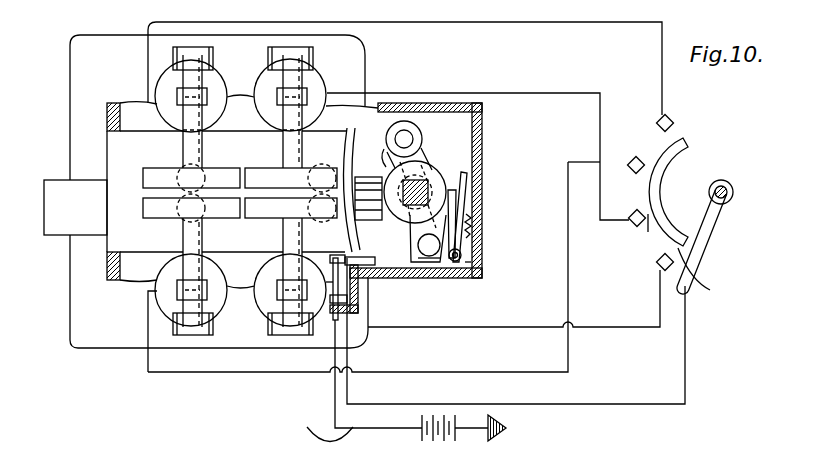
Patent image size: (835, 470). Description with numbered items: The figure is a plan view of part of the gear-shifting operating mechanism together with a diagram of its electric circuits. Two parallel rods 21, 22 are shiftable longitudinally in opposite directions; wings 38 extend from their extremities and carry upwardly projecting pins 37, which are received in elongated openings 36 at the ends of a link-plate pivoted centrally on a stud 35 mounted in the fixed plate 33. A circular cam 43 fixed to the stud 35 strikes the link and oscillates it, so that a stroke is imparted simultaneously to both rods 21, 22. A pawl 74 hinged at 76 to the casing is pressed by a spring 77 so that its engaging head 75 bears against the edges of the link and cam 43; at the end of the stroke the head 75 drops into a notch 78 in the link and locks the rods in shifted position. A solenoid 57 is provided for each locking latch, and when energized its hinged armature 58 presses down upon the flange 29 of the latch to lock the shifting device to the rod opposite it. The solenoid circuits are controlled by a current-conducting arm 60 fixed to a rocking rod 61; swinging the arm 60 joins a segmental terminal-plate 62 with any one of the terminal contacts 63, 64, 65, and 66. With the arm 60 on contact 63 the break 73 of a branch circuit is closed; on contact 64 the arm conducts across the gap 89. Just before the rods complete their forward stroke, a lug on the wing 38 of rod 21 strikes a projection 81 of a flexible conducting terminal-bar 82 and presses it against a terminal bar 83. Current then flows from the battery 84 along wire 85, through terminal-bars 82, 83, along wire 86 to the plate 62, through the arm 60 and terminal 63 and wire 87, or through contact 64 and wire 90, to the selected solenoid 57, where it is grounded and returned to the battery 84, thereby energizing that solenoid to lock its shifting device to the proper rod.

The rod 21 is at (372, 214).
The rod 22 is at (366, 167).
The flange 29 is at (205, 133).
The plate 33 is at (263, 191).
The stud 35 is at (432, 170).
The elongated openings 36 is at (438, 178).
The pins 37 is at (409, 137).
The wings 38 is at (387, 145).
The circular cam 43 is at (437, 182).
The solenoid 57 is at (250, 87).
The armature 58 is at (263, 168).
The current-conducting arm 60 is at (706, 251).
The rocking rod 61 is at (733, 195).
The segmental terminal-plate 62 is at (662, 185).
The terminal contact 63 is at (657, 264).
The terminal contact 64 is at (634, 227).
The terminal contact 65 is at (636, 173).
The terminal contact 66 is at (672, 120).
The break 73 is at (711, 277).
The pawl 74 is at (458, 207).
The engaging head 75 is at (463, 178).
The hinge 76 is at (481, 270).
The spring 77 is at (473, 236).
The notch 78 is at (551, 145).
The projection 81 is at (430, 255).
The flexible conducting terminal-bar 82 is at (355, 282).
The terminal bar 83 is at (347, 262).
The battery 84 is at (440, 443).
The wire 85 is at (333, 406).
The wire 86 is at (686, 348).
The wire 87 is at (518, 327).
The gap 89 is at (648, 234).
The wire 90 is at (598, 122).